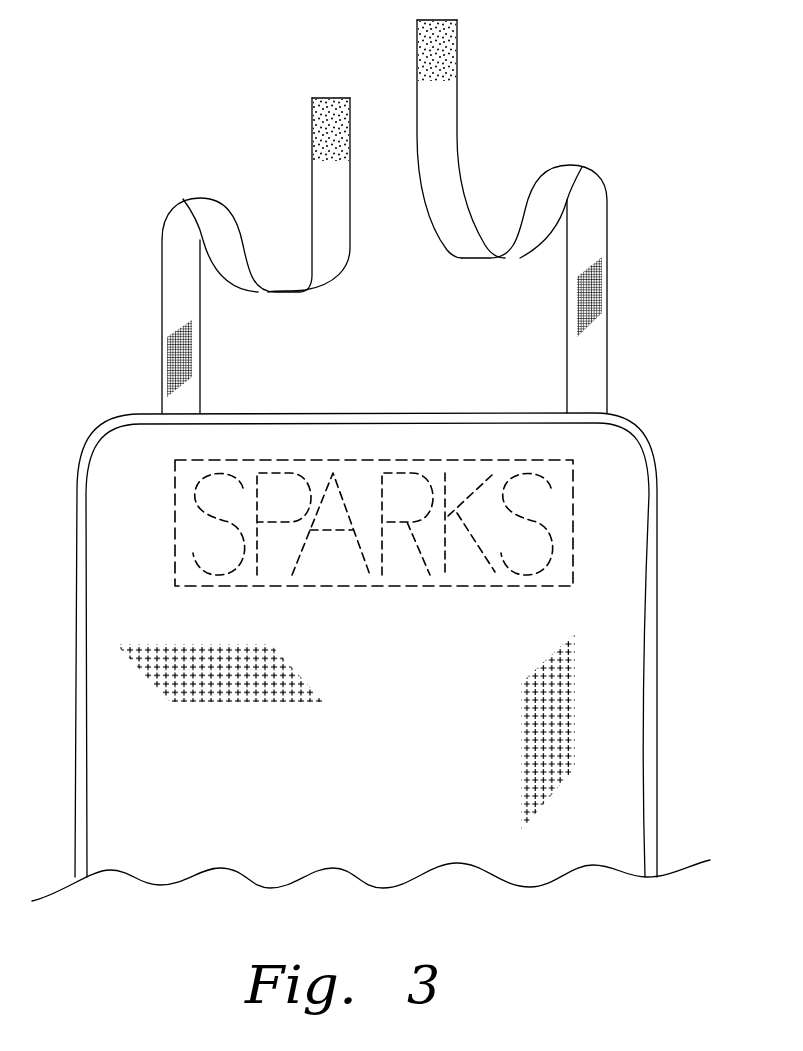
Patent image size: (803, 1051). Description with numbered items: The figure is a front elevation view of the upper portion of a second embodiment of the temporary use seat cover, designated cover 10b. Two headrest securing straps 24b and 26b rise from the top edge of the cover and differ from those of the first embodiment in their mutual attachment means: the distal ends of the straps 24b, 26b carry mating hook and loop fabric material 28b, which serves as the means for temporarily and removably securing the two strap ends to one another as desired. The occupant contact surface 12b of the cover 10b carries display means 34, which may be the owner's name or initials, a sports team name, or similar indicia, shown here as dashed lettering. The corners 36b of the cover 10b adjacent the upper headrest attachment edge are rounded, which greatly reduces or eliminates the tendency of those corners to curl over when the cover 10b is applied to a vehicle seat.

The cover 10b is at (376, 696).
The occupant contact surface 12b is at (410, 748).
The headrest securing strap 24b is at (608, 275).
The headrest securing strap 26b is at (163, 275).
The hook and loop fabric material 28b is at (427, 42).
The display means 34 is at (170, 528).
The corners 36b is at (107, 425).